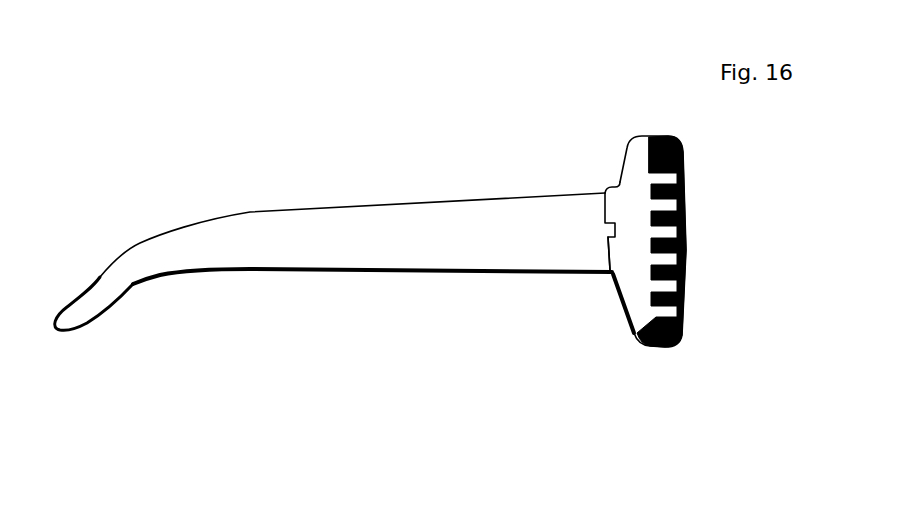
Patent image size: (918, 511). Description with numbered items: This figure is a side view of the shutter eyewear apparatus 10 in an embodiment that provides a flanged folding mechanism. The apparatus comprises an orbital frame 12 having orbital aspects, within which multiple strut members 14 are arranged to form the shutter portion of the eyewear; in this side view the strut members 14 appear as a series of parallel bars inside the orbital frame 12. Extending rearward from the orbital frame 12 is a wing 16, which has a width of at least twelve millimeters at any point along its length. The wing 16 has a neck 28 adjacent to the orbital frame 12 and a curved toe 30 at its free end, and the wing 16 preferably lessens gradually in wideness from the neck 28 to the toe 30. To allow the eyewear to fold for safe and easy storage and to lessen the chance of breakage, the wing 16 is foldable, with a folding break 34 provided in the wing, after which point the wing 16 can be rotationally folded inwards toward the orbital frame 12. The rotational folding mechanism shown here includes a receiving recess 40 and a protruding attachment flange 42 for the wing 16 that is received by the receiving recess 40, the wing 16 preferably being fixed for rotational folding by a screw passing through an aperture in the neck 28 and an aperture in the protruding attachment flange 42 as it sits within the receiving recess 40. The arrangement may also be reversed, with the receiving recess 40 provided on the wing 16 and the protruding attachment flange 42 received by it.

The shutter eyewear apparatus 10 is at (92, 125).
The orbital frame 12 is at (607, 147).
The strut members 14 is at (677, 188).
The wing 16 is at (297, 192).
The neck 28 is at (596, 296).
The curved toe 30 is at (143, 315).
The folding break 34 is at (607, 245).
The receiving recess 40 is at (619, 222).
The protruding attachment flange 42 is at (603, 225).